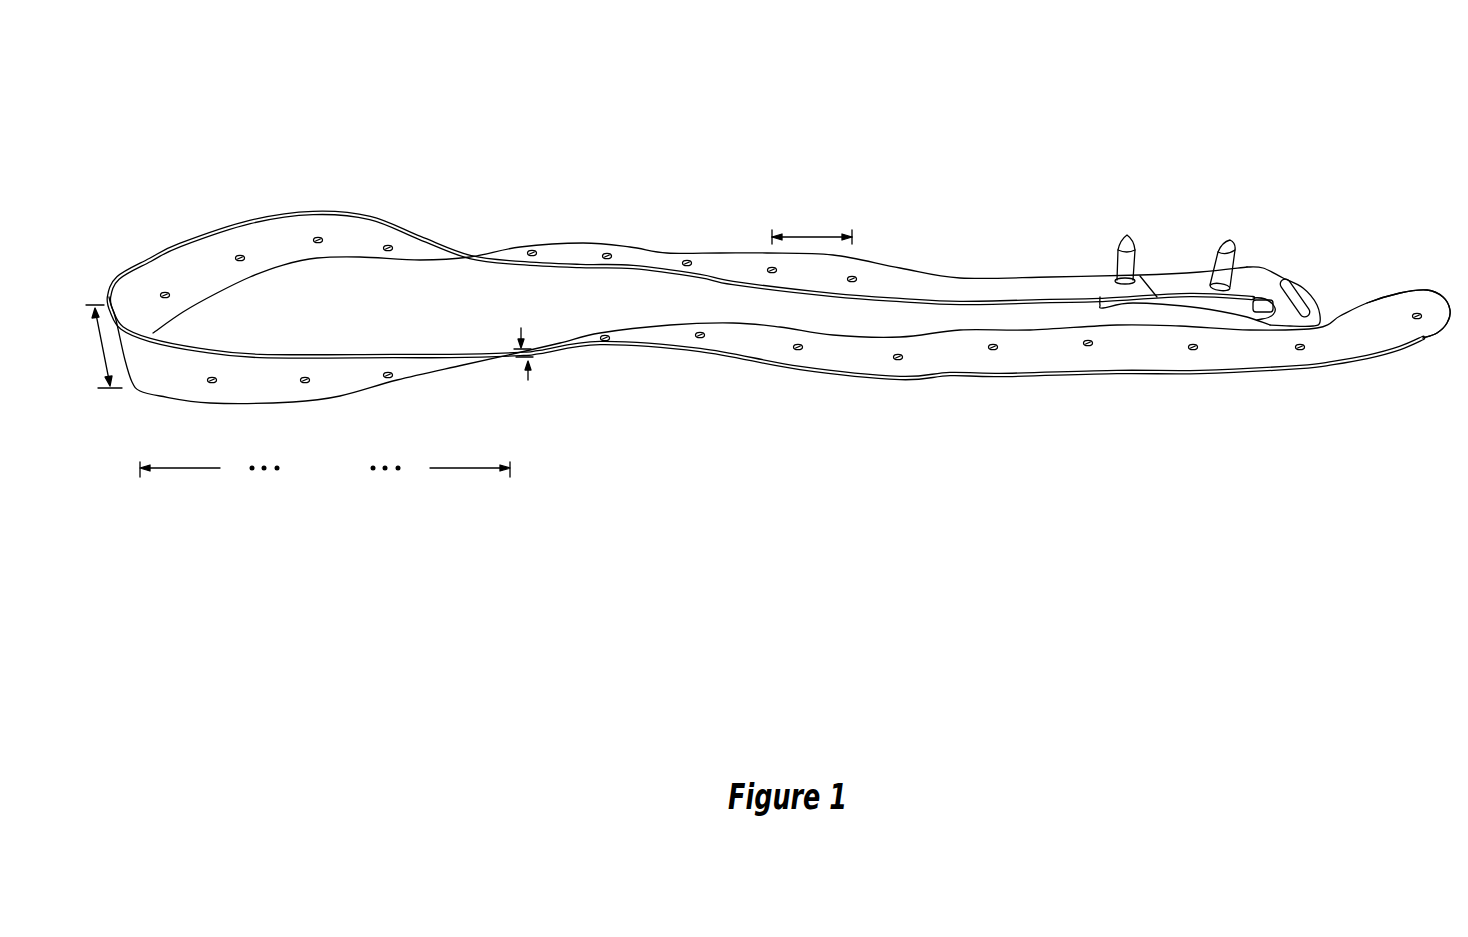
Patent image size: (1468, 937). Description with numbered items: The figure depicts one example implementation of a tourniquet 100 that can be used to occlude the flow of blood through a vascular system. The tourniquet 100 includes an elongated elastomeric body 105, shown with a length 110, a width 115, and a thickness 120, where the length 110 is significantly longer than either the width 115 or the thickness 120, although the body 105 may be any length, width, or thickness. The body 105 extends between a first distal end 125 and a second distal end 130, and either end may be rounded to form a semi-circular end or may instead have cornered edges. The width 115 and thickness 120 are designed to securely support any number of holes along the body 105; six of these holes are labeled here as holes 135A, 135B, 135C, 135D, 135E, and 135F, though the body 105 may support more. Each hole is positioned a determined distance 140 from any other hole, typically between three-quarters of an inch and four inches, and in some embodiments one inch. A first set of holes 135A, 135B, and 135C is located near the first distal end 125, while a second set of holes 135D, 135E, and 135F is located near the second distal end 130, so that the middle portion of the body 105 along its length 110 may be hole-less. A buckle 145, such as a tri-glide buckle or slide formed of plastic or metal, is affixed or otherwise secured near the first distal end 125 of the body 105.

The tourniquet 100 is at (806, 40).
The elongated elastomeric body 105 is at (800, 370).
The length 110 is at (187, 471).
The width 115 is at (103, 357).
The thickness 120 is at (530, 370).
The first distal end 125 is at (1135, 303).
The second distal end 130 is at (1428, 289).
The hole 135A is at (687, 259).
The hole 135B is at (770, 266).
The hole 135C is at (854, 276).
The hole 135D is at (1195, 353).
The hole 135E is at (1300, 353).
The hole 135F is at (1417, 321).
The determined distance 140 is at (812, 234).
The buckle 145 is at (1275, 273).